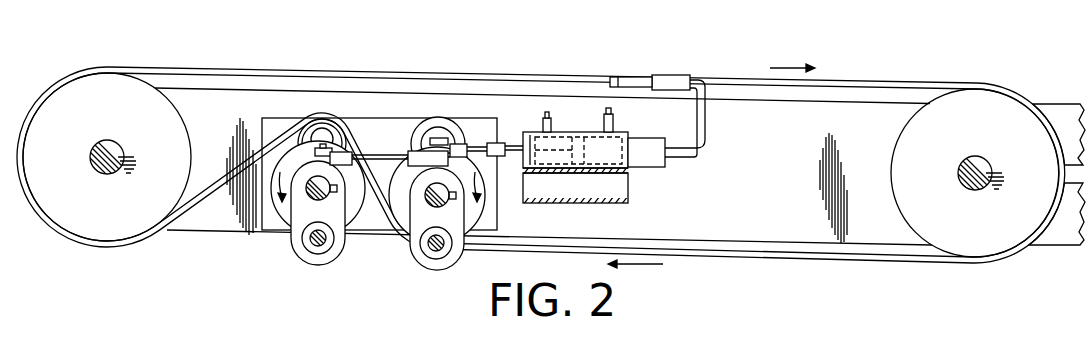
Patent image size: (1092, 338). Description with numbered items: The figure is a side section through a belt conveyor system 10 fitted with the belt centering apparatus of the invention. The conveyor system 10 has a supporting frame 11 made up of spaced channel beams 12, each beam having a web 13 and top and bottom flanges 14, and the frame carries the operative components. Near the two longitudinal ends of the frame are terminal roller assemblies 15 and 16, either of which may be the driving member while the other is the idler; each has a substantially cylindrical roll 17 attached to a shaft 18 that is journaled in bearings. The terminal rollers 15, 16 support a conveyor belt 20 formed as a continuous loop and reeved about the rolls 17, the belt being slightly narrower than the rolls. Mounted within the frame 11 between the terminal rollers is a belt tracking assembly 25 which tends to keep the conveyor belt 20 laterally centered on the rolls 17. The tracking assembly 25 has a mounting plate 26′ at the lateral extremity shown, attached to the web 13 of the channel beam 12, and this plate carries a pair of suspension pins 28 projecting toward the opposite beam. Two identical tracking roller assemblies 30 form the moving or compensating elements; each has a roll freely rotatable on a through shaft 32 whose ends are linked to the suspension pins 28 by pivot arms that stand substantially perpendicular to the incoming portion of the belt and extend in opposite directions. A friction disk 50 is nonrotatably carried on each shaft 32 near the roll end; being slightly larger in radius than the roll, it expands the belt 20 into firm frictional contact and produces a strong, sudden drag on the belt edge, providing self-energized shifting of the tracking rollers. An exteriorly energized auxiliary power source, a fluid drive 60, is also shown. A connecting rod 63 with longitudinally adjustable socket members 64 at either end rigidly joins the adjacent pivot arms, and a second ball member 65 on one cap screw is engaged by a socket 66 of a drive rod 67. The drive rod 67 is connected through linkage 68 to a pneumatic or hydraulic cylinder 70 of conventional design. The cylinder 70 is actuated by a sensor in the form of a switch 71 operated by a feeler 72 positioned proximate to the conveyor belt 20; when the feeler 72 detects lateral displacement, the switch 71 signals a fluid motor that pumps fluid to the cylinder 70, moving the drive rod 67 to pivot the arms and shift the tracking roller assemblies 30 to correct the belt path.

The conveyor system 10 is at (714, 65).
The supporting frame 11 is at (1052, 252).
The channel beams 12 is at (533, 238).
The web 13 is at (858, 222).
The flanges 14 is at (805, 249).
The terminal roller assembly 15 is at (1036, 98).
The terminal roller assembly 16 is at (43, 84).
The cylindrical rolls 17 is at (60, 208).
The shafts 18 is at (101, 174).
The conveyor belt 20 is at (260, 72).
The belt tracking assembly 25 is at (367, 64).
The mounting plate 26′ is at (398, 131).
The suspension pins 28 is at (320, 246).
The tracking roller assemblies 30 is at (403, 250).
The through shaft 32 is at (305, 222).
The friction disk 50 is at (362, 208).
The fluid drive 60 is at (552, 104).
The connecting rod 63 is at (378, 152).
The socket members 64 is at (340, 150).
The second ball member 65 is at (448, 143).
The socket 66 is at (452, 150).
The drive rod 67 is at (500, 159).
The linkage 68 is at (507, 143).
The hydraulic cylinder 70 is at (562, 136).
The switch 71 is at (672, 77).
The feeler 72 is at (628, 77).